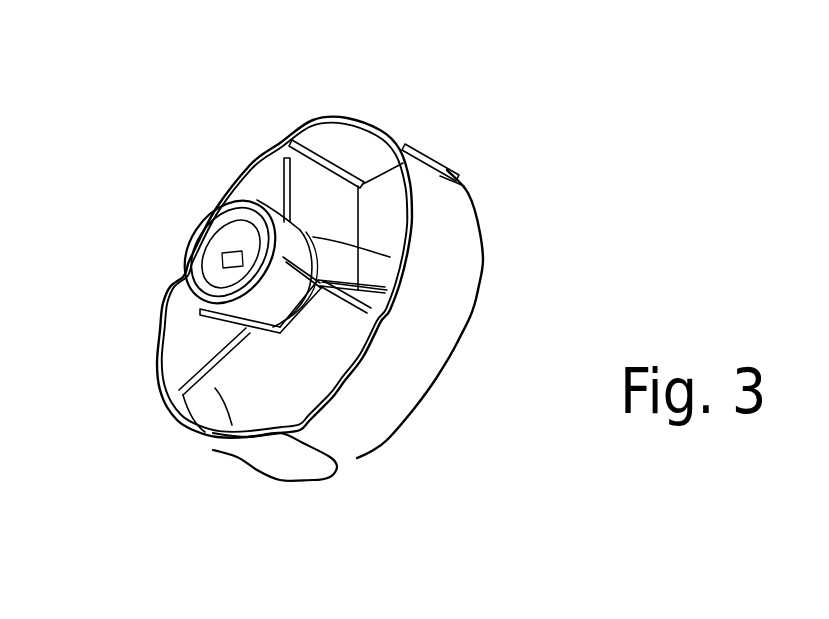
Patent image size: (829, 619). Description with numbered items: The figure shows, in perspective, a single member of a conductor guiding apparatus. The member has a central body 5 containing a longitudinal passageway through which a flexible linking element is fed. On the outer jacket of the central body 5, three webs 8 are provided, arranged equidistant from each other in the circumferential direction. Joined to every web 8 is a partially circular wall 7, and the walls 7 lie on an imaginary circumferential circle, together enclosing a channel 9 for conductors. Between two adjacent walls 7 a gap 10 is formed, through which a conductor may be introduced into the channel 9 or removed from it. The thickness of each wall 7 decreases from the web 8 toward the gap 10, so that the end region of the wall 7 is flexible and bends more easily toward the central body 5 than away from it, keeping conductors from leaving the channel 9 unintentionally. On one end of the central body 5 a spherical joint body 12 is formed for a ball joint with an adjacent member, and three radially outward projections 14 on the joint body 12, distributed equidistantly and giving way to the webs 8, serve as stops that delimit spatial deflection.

The central body 5 is at (163, 433).
The wall 7 is at (315, 122).
The web 8 is at (440, 155).
The channel 9 is at (377, 127).
The gap 10 is at (467, 182).
The joint body 12 is at (247, 197).
The projection 14 is at (370, 322).